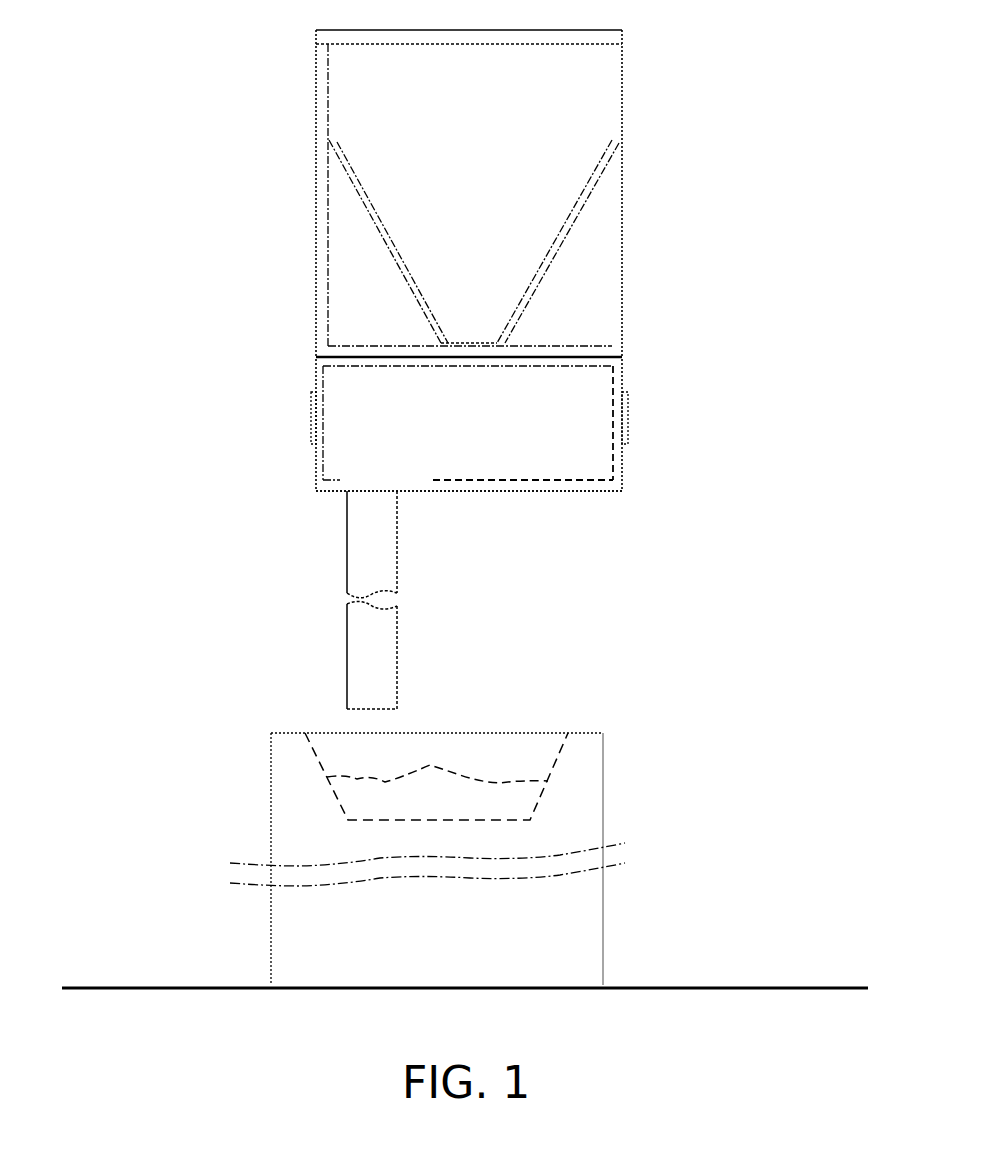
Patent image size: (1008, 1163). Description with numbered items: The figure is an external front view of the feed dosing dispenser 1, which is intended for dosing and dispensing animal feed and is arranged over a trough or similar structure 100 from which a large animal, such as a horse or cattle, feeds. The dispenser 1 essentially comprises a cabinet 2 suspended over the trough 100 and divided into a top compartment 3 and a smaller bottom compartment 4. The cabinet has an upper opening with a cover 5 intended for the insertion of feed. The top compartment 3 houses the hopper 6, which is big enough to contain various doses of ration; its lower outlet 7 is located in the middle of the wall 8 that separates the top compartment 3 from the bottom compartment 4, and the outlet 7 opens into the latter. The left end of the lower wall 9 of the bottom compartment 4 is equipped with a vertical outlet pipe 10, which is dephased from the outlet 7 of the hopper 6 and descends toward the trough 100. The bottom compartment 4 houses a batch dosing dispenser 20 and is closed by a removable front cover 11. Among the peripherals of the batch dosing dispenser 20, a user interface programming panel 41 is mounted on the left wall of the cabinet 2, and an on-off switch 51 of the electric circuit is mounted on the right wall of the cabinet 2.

The feed dosing dispenser 1 is at (708, 100).
The cabinet 2 is at (308, 99).
The top compartment 3 is at (412, 128).
The bottom compartment 4 is at (358, 405).
The cover 5 is at (328, 34).
The hopper 6 is at (375, 235).
The lower outlet 7 is at (463, 343).
The wall 8 is at (355, 357).
The lower wall 9 is at (316, 486).
The vertical outlet pipe 10 is at (372, 543).
The removable front cover 11 is at (586, 383).
The batch dosing dispenser 20 is at (592, 458).
The user interface programming panel 41 is at (312, 425).
The on-off switch 51 is at (638, 427).
The trough 100 is at (293, 808).